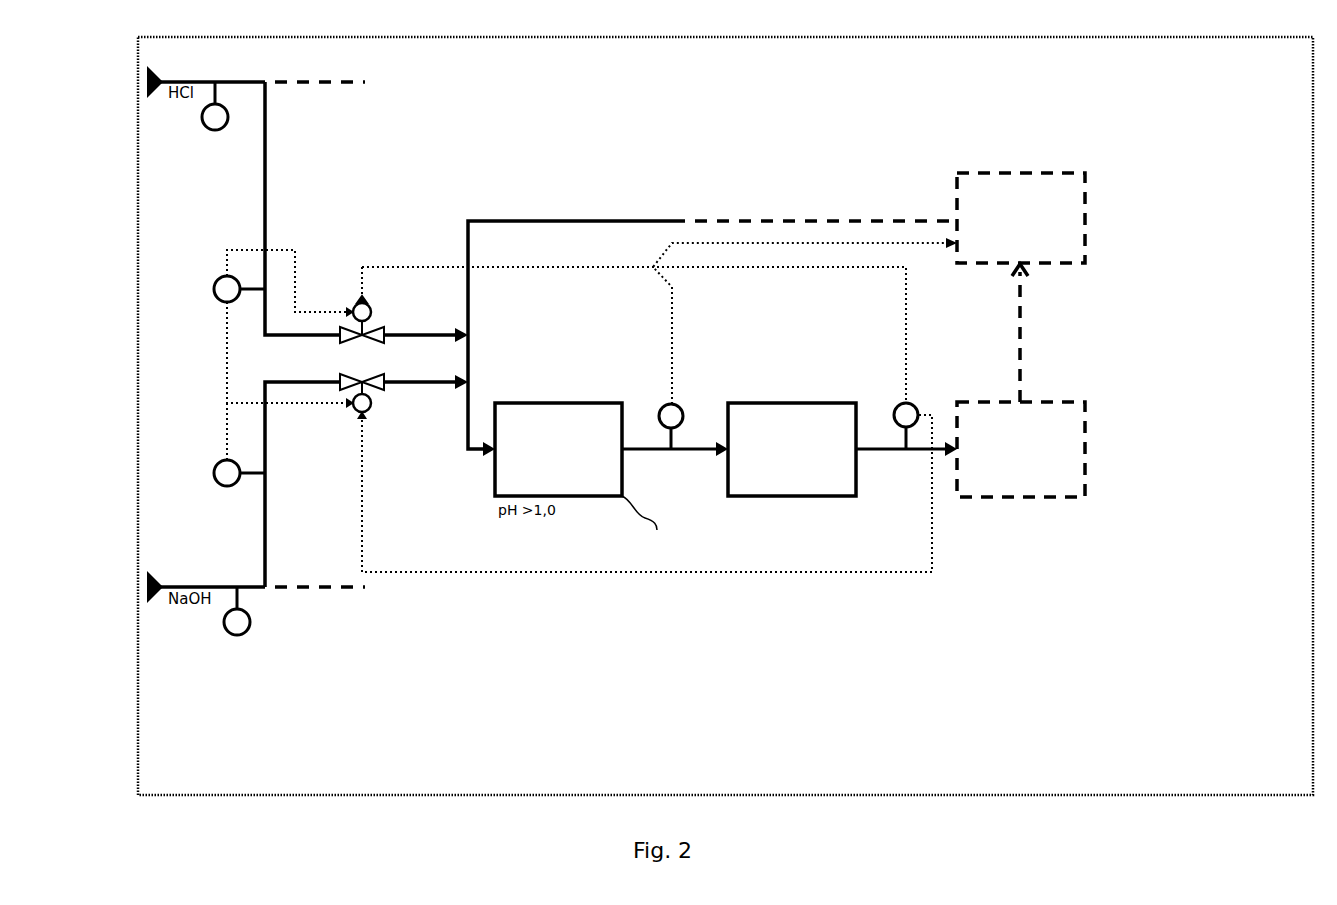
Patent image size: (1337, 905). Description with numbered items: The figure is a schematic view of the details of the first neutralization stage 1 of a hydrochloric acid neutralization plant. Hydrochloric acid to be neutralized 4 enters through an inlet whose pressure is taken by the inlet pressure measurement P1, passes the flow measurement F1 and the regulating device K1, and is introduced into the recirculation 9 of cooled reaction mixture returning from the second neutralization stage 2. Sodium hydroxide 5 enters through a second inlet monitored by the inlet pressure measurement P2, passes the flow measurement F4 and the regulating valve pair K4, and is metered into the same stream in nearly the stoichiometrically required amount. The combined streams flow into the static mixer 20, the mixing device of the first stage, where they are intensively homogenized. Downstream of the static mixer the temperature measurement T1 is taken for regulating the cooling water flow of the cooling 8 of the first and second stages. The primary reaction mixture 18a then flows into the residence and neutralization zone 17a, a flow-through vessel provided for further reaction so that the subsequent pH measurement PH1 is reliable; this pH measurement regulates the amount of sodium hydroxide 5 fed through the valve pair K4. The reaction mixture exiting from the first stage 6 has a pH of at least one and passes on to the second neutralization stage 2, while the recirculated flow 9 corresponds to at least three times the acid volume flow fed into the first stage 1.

The first neutralization stage 1 is at (558, 449).
The second neutralization stage 2 is at (1021, 449).
The hydrochloric acid to be neutralized 4 is at (366, 212).
The sodium hydroxide 5 is at (366, 481).
The reaction mixture exiting from the first stage 6 is at (906, 458).
The cooling of the first and second neutralization stages 8 is at (1021, 218).
The recirculation of cooled reaction mixture of the second stage 9 is at (712, 338).
The residence and neutralization zone after the first stage 17a is at (792, 449).
The primary reaction mixture of the first stage 18a is at (675, 458).
The static mixer of the first stage 20 is at (650, 526).
The regulating device for hydrochloric acid inflow into first neutralization stage K1 is at (367, 318).
The regulating valve pair for sodium hydroxide inflow into first neutralization stag K4 is at (367, 400).
The flow measurement for hydrochloric acid inflow into first neutralization stage F1 is at (228, 290).
The flow measurement of sodium hydroxide inflow into first neutralization stage F4 is at (228, 473).
The inlet pressure measurement for hydrochloric acid P1 is at (210, 116).
The inlet pressure measurement for sodium hydroxide P2 is at (232, 622).
The temperature measurement after first neutralization stage T1 is at (678, 417).
The pH measurement after first neutralization stage PH1 is at (917, 417).